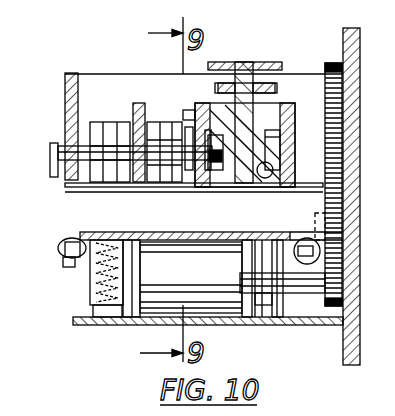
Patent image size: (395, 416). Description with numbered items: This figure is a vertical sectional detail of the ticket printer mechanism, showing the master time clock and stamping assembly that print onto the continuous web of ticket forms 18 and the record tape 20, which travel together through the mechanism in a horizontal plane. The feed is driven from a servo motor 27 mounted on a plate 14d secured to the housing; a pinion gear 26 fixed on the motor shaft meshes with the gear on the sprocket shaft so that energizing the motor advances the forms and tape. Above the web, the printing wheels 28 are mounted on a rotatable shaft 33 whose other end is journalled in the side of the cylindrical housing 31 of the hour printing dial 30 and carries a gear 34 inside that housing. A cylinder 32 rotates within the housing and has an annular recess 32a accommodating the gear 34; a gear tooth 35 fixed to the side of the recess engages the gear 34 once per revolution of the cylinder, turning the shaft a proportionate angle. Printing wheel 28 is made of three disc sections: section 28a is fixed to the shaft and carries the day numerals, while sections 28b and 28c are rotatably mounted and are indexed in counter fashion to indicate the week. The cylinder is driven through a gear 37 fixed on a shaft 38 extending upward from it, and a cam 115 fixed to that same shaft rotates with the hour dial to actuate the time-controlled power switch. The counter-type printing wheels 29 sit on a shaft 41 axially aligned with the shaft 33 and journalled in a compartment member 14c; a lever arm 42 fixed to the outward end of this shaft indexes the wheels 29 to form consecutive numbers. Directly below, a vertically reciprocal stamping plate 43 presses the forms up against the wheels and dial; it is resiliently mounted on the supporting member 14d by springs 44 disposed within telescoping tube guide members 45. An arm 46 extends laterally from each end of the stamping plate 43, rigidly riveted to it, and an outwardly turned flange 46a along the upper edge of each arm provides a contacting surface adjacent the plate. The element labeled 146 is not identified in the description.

The compartment member 14c is at (64, 80).
The plate 14d is at (82, 326).
The ticket forms 18 is at (70, 183).
The continuous web record tape 20 is at (101, 181).
The printing wheels 29 is at (110, 121).
The support wall 146 is at (138, 103).
The printing wheels 28 is at (157, 116).
The wheel section 28a is at (177, 125).
The wheel section 28b is at (166, 182).
The wheel section 28c is at (153, 182).
The shaft 41 is at (88, 150).
The lever arm 42 is at (52, 155).
The cam 115 is at (222, 62).
The shaft 38 is at (242, 68).
The gear 37 is at (278, 90).
The hour printing dial 30 is at (302, 66).
The cylinder 32 is at (272, 118).
The cylindrical housing 31 is at (296, 116).
The rotatable shaft 33 is at (205, 140).
The gear 34 is at (224, 147).
The gear tooth 35 is at (290, 160).
The annular recess 32a is at (265, 178).
The stamping plate 43 is at (100, 232).
The outwardly turned flange 46a is at (60, 242).
The arm 46 is at (62, 258).
The telescoping tube guide members 45 is at (95, 275).
The springs 44 is at (93, 310).
The servo motor 27 is at (200, 300).
The pinion gear 26 is at (328, 305).